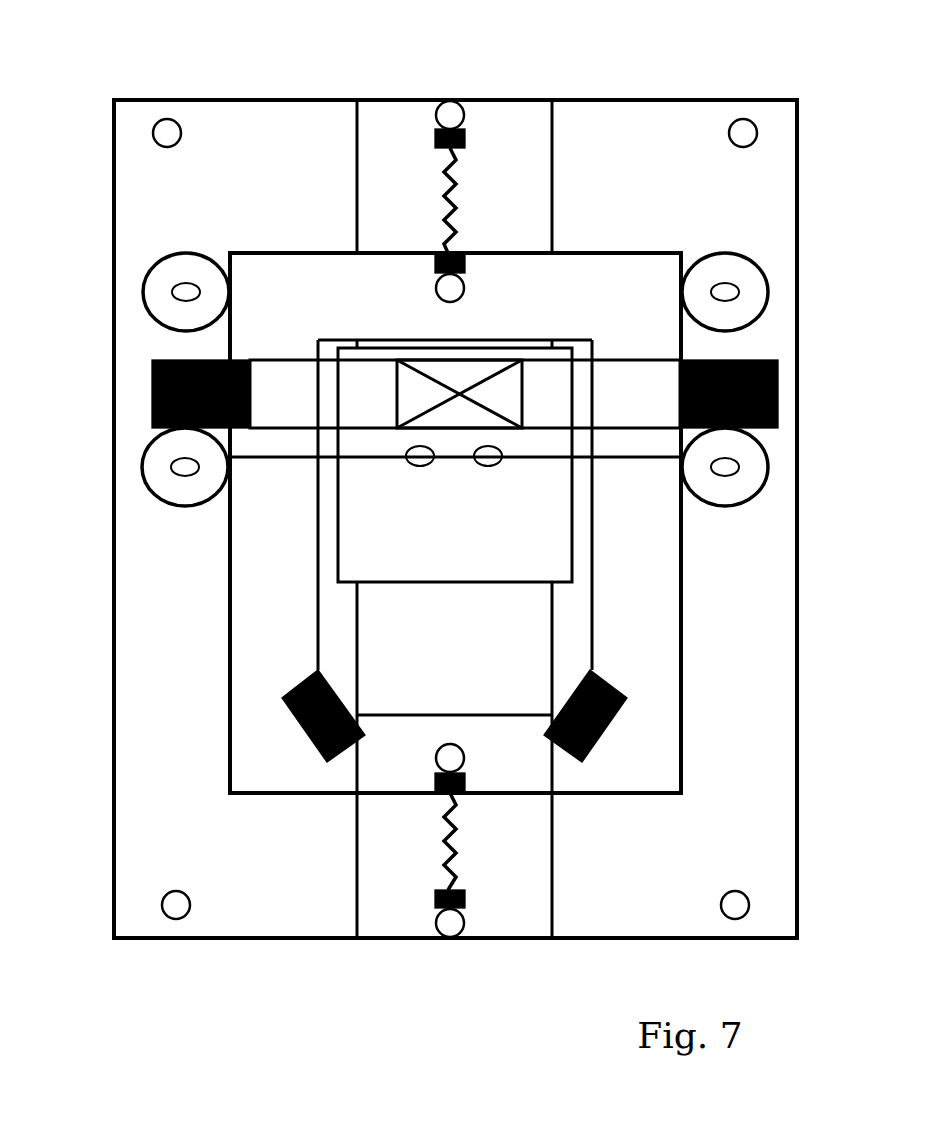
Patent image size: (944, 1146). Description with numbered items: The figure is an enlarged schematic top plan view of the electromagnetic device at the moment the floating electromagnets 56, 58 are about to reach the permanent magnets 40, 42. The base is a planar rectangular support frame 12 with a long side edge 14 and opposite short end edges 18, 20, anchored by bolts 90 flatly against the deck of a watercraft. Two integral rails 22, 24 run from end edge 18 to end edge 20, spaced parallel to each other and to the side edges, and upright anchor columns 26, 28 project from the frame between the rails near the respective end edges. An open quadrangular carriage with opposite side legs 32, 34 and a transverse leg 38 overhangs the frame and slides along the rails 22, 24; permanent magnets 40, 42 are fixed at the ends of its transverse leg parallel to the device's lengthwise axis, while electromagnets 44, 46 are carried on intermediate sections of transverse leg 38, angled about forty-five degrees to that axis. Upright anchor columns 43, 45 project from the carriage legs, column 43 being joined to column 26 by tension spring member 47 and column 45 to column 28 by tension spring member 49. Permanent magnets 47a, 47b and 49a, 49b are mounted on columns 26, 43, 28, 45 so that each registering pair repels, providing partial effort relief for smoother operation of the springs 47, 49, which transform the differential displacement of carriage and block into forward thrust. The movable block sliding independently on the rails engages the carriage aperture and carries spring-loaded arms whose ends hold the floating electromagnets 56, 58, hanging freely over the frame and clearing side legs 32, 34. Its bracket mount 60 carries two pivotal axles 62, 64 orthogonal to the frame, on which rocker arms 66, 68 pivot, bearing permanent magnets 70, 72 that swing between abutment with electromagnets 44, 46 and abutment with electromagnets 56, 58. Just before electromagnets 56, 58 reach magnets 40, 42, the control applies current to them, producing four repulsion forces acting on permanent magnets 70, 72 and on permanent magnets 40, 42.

The planar rectangular support frame 12 is at (223, 211).
The long side edge 14 is at (87, 630).
The short end edge 18 is at (229, 938).
The short end edge 20 is at (160, 100).
The rail 22 is at (357, 148).
The rail 24 is at (552, 155).
The upright anchor column 26 is at (440, 920).
The upright anchor column 28 is at (446, 110).
The side leg 32 is at (263, 616).
The side leg 34 is at (623, 616).
The transverse leg 38 is at (526, 768).
The permanent magnet 40 is at (143, 292).
The permanent magnet 42 is at (768, 290).
The upright anchor column 43 is at (464, 758).
The electromagnet 44 is at (283, 697).
The upright anchor column 45 is at (466, 288).
The electromagnet 46 is at (621, 712).
The tension spring member 47 is at (443, 872).
The permanent magnet 47a is at (466, 895).
The permanent magnet 47b is at (433, 773).
The tension spring member 49 is at (440, 178).
The permanent magnet 49a is at (467, 133).
The permanent magnet 49b is at (470, 263).
The floating electromagnet 56 is at (152, 393).
The floating electromagnet 58 is at (778, 398).
The bracket mount 60 is at (422, 398).
The pivotal axle 62 is at (419, 466).
The pivotal axle 64 is at (490, 467).
The rocker arm 66 is at (268, 457).
The rocker arm 68 is at (600, 457).
The permanent magnet 70 is at (143, 467).
The permanent magnet 72 is at (768, 467).
The bolt 90 is at (153, 131).